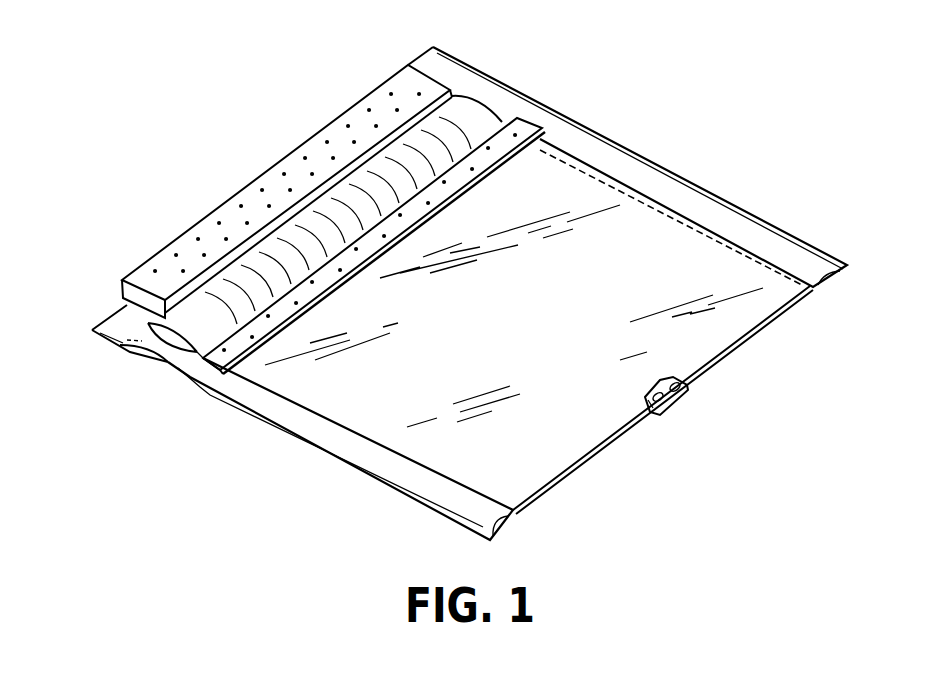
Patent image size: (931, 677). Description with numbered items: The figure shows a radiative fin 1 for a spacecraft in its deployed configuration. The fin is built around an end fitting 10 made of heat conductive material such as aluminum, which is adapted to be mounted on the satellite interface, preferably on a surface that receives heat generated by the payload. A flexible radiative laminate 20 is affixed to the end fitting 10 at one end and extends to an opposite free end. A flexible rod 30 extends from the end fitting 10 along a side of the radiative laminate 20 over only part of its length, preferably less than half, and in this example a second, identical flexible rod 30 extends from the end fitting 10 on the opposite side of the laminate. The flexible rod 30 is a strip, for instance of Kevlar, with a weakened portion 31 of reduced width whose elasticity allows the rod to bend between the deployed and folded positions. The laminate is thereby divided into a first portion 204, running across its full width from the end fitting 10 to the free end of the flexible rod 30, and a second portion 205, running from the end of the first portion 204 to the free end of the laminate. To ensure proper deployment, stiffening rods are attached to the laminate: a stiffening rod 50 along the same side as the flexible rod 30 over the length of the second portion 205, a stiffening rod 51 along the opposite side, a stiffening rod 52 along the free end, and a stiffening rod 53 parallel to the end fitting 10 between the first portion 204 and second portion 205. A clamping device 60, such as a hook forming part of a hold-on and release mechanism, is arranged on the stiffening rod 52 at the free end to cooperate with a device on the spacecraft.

The radiative fin 1 is at (232, 133).
The end fitting 10 is at (332, 137).
The flexible radiative laminate 20 is at (632, 233).
The flexible rod 30 is at (467, 116).
The weakened portion 31 is at (137, 357).
The stiffening rod 50 is at (408, 478).
The stiffening rod 51 is at (765, 240).
The stiffening rod 52 is at (738, 350).
The stiffening rod 53 is at (237, 343).
The clamping device 60 is at (674, 404).
The first portion 204 is at (486, 126).
The second portion 205 is at (373, 403).